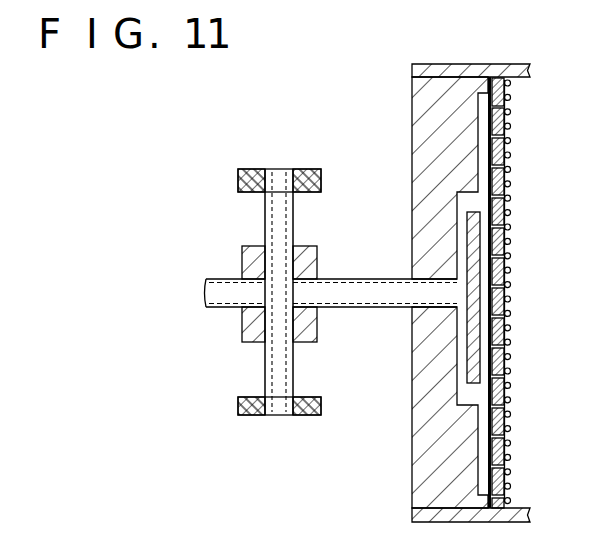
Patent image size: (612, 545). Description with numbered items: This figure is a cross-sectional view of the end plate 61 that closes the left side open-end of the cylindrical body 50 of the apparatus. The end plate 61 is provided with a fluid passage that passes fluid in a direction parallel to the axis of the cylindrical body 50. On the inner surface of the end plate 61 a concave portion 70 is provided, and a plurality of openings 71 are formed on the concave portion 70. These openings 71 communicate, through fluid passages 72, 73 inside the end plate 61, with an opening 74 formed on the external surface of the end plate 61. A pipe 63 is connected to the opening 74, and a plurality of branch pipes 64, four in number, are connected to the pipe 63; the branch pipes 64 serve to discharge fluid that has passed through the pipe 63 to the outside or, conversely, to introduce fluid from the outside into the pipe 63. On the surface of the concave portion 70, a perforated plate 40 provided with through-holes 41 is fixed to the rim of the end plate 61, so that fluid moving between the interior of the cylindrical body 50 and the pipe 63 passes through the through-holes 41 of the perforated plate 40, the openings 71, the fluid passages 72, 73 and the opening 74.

The perforated plate 40 is at (511, 155).
The through-holes 41 is at (510, 240).
The cylindrical body 50 is at (492, 66).
The end plate 61 is at (425, 478).
The pipe 63 is at (212, 309).
The branch pipes 64 is at (265, 214).
The concave portion 70 is at (484, 120).
The openings 71 is at (468, 204).
The fluid passage 72 is at (459, 314).
The fluid passage 73 is at (438, 291).
The opening 74 is at (413, 291).